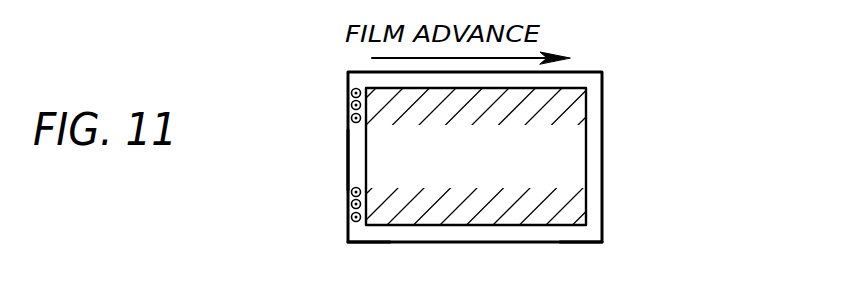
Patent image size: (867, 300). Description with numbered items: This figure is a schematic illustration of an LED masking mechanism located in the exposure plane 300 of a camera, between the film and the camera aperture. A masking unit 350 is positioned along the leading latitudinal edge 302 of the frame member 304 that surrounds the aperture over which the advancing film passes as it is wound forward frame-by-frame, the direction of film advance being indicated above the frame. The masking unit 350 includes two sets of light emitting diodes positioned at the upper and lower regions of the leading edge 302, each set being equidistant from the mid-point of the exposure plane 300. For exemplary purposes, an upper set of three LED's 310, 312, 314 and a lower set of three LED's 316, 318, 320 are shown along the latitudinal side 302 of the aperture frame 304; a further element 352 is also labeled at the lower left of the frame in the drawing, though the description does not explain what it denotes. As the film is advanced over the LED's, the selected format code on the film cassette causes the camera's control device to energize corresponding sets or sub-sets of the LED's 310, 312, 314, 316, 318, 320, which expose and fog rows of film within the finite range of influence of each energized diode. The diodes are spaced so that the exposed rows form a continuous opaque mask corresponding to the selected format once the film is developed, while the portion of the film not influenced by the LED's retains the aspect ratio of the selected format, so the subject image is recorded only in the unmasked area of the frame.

The exposure plane 300 is at (610, 100).
The leading latitudinal edge 302 is at (348, 155).
The frame member 304 is at (598, 170).
The light emitting diode 310 is at (351, 93).
The light emitting diode 312 is at (351, 105).
The light emitting diode 314 is at (351, 118).
The light emitting diode 316 is at (351, 218).
The light emitting diode 318 is at (351, 204).
The light emitting diode 320 is at (351, 192).
The masking unit 350 is at (573, 263).
The frame boundary 352 is at (316, 271).